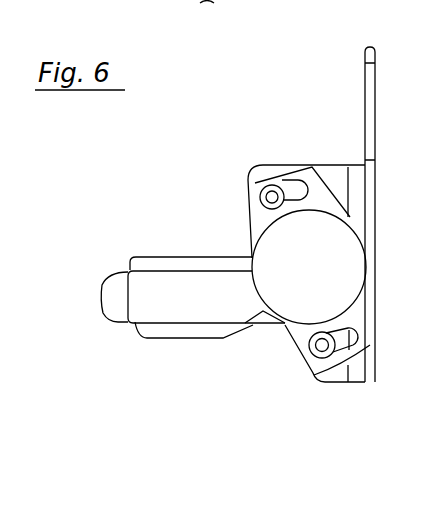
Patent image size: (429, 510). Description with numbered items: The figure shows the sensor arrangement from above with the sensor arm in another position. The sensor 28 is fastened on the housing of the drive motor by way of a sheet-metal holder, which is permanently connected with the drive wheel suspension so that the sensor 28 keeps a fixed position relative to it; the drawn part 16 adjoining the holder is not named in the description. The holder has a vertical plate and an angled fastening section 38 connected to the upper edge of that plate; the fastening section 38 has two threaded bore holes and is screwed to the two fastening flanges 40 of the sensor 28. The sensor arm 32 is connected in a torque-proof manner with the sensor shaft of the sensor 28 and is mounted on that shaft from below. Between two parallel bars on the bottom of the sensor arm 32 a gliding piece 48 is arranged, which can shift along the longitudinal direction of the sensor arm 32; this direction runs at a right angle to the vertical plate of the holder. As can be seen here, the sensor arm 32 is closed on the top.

The mounting plate 16 is at (375, 106).
The sensor 28 is at (352, 272).
The sensor arm 32 is at (158, 265).
The fastening section 38 is at (329, 176).
The fastening flanges 40 is at (370, 347).
The gliding piece 48 is at (112, 327).